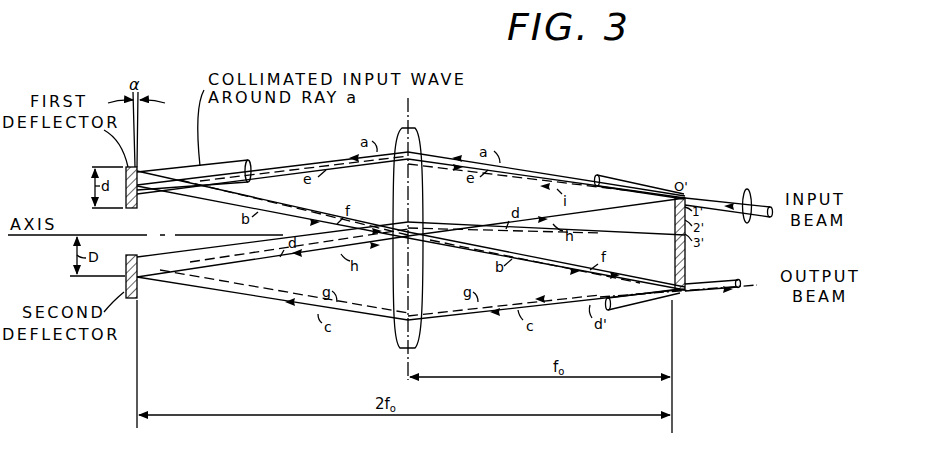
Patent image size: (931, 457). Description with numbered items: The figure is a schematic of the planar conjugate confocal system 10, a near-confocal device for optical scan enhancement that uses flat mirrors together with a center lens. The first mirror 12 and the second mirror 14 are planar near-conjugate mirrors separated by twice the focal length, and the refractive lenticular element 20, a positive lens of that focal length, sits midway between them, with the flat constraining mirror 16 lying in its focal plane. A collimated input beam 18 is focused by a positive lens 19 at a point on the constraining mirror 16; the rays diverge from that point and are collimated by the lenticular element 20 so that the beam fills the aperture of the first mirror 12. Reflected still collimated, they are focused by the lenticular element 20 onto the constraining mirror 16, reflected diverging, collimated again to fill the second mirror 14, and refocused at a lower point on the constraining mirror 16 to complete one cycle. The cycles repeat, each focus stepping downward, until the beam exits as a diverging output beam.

The planar conjugate confocal system 10 is at (583, 148).
The first mirror 12 is at (138, 210).
The second mirror 14 is at (137, 297).
The flat constraining mirror 16 is at (675, 249).
The collimated input beam 18 is at (757, 217).
The positive lens 19 is at (747, 189).
The refractive lenticular element 20 is at (413, 147).